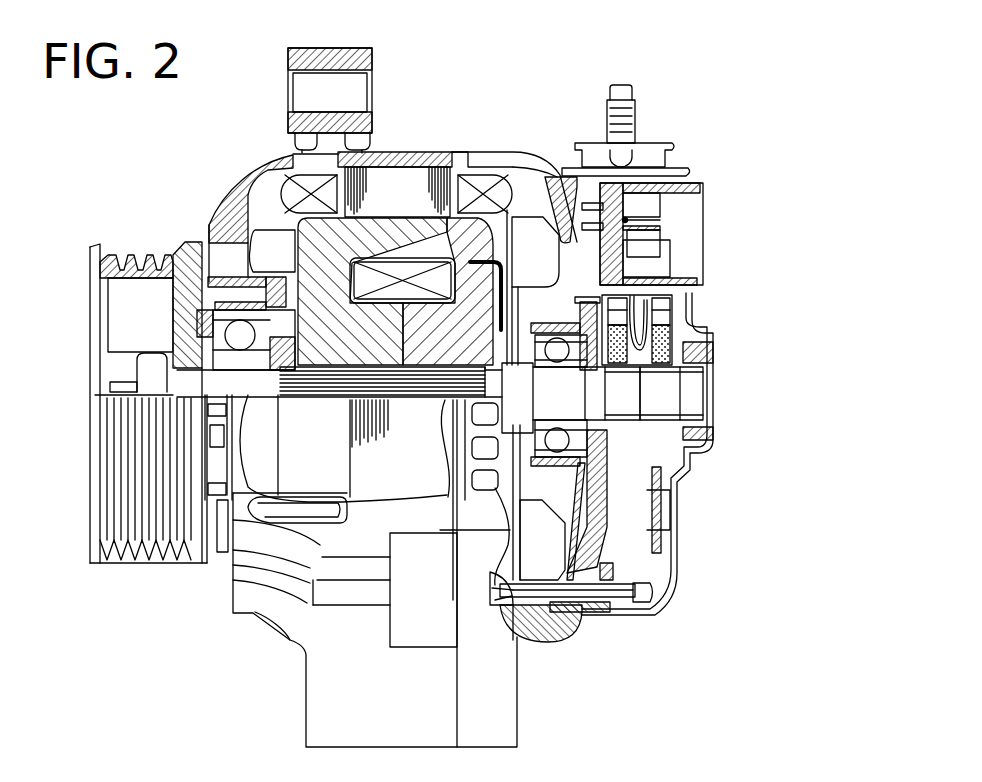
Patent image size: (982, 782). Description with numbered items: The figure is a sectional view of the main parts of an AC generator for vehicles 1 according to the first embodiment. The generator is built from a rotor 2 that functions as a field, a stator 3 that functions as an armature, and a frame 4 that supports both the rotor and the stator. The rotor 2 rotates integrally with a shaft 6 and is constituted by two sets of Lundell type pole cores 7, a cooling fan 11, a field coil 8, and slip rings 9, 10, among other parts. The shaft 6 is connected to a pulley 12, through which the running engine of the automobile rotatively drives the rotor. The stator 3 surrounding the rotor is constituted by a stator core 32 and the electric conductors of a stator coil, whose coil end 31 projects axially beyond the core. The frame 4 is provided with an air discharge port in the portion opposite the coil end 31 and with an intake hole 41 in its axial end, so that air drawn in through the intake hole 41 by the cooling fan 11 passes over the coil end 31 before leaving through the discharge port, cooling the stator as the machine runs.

The AC generator for vehicles 1 is at (503, 69).
The rotor 2 is at (266, 216).
The stator 3 is at (518, 170).
The frame 4 is at (405, 157).
The shaft 6 is at (202, 378).
The Lundell type pole cores 7 is at (490, 245).
The field coil 8 is at (403, 270).
The slip ring 9 is at (627, 403).
The slip ring 10 is at (670, 380).
The cooling fan 11 is at (262, 257).
The pulley 12 is at (110, 278).
The coil end 31 is at (291, 193).
The stator core 32 is at (380, 173).
The intake hole 41 is at (253, 173).